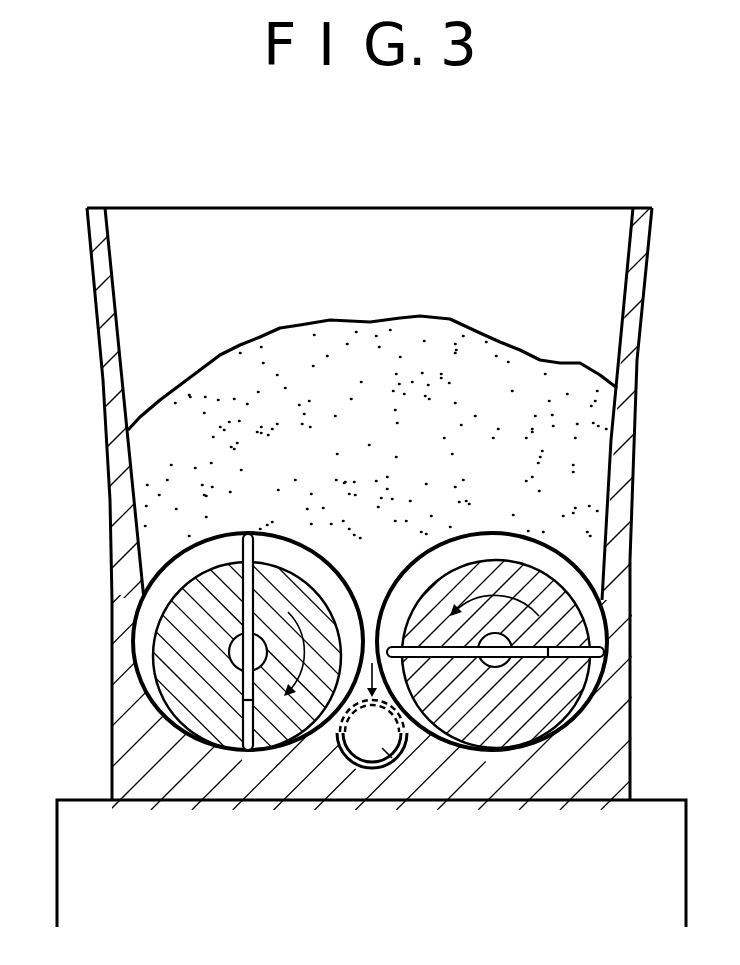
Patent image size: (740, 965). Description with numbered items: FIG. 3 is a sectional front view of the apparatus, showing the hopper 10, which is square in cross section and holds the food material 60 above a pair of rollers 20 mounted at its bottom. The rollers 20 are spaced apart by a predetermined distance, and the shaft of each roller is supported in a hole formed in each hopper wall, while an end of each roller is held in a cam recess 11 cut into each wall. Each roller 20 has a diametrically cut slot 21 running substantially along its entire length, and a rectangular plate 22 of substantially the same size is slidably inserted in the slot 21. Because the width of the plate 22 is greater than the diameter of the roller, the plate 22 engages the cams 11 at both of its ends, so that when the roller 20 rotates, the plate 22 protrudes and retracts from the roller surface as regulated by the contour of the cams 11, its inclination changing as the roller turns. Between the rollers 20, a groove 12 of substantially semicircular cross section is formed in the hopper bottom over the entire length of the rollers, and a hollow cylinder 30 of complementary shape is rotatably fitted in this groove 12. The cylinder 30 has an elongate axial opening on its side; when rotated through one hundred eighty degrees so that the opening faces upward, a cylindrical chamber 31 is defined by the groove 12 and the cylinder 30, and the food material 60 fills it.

The hopper 10 is at (642, 277).
The cam recess 11 is at (545, 741).
The groove 12 is at (372, 775).
The roller 20 is at (165, 650).
The slot 21 is at (246, 752).
The rectangular plate 22 is at (245, 699).
The hollow cylinder 30 is at (350, 752).
The cylindrical chamber 31 is at (382, 748).
The food material 60 is at (387, 333).